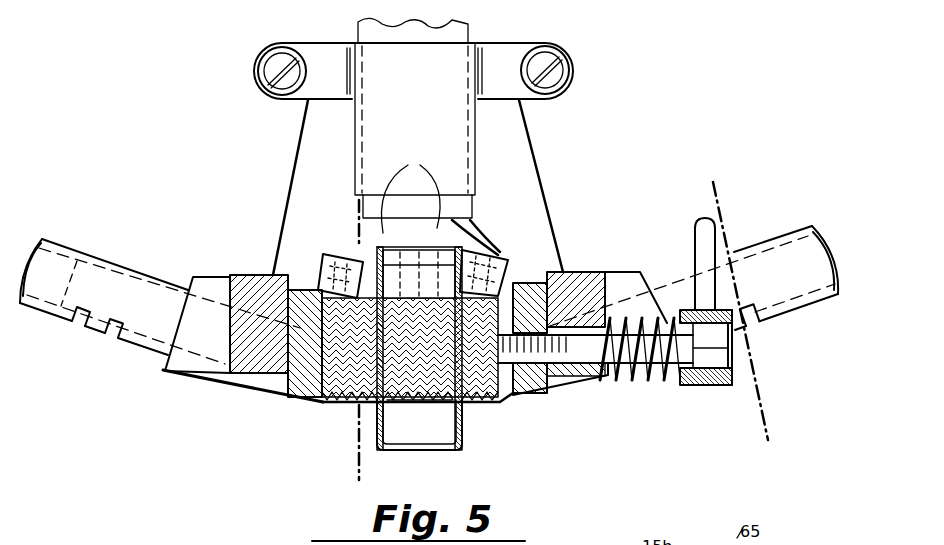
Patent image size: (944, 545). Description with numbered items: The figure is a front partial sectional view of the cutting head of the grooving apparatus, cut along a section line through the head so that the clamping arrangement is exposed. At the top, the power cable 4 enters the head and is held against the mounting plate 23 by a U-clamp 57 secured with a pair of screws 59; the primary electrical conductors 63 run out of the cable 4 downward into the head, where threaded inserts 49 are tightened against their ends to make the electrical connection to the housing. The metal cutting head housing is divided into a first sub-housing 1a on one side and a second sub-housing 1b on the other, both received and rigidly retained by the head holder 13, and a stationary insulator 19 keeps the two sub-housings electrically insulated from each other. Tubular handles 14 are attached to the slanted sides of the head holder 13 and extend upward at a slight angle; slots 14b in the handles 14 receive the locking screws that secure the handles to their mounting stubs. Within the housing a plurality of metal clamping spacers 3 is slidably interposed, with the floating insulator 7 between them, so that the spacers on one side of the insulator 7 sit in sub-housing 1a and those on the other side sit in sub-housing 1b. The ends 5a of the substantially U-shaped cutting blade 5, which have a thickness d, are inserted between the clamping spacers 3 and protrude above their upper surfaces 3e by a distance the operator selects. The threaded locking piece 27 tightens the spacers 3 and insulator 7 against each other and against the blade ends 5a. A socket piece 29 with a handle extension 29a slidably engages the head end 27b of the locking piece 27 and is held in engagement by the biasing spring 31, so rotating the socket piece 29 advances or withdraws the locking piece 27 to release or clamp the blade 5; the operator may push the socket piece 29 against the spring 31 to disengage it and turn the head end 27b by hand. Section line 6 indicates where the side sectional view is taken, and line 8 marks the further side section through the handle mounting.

The power cable 4 is at (453, 33).
The U-clamp 57 is at (503, 70).
The screws 59 is at (280, 76).
The mounting plate 23 is at (513, 147).
The primary electrical conductors 63 is at (440, 200).
The handles 14 is at (92, 257).
The slots in handles 14b is at (113, 338).
The first sub-housing 1a is at (300, 326).
The clamping spacers 3 is at (317, 393).
The cutting blade 5 is at (428, 451).
The floating insulator 7 is at (418, 401).
The thickness of cutting blade ends d is at (423, 422).
The ends of cutting blade 5a is at (367, 262).
The threaded inserts 49 is at (510, 258).
The stationary insulator 19 is at (465, 260).
The upper surfaces of clamping spacers 3e is at (532, 284).
The second sub-housing 1b is at (583, 272).
The head holder 13 is at (626, 290).
The threaded locking piece 27 is at (597, 372).
The biasing spring 31 is at (643, 378).
The socket piece 29 is at (688, 387).
The head end of threaded locking piece 27b is at (711, 371).
The handle extension 29a is at (705, 230).
The channel 6 is at (352, 219).
The section line 8- 8 is at (733, 184).